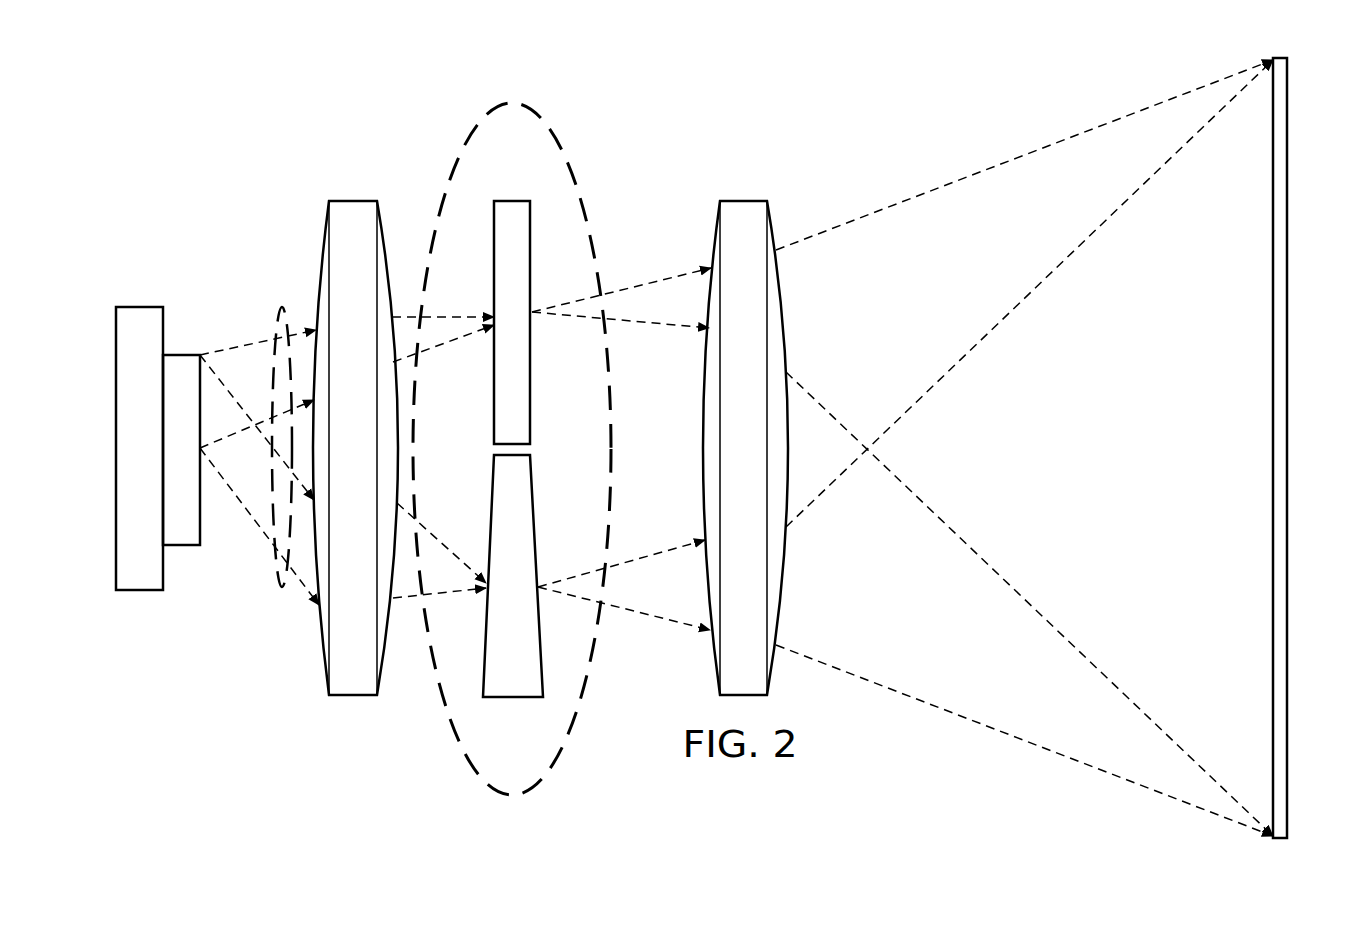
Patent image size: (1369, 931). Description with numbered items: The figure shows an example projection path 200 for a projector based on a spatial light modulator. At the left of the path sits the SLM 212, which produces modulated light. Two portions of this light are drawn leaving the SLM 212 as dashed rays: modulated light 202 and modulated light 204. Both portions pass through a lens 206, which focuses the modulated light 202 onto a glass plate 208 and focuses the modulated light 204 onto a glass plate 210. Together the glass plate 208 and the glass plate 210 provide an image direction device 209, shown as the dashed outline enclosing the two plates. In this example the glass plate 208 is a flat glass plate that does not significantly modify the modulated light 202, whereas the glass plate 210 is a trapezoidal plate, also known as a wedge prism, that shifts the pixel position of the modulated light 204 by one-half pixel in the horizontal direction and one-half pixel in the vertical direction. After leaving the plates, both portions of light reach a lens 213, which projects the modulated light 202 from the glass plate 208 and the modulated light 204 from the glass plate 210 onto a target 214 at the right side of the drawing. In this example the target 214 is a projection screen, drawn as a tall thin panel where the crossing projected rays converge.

The projection path 200 is at (228, 112).
The modulated light 202 is at (281, 307).
The modulated light 204 is at (288, 587).
The lens 206 is at (350, 201).
The glass plate 208 is at (510, 201).
The image direction device 209 is at (582, 183).
The glass plate 210 is at (512, 697).
The SLM 212 is at (140, 307).
The lens 213 is at (745, 201).
The target 214 is at (1288, 447).